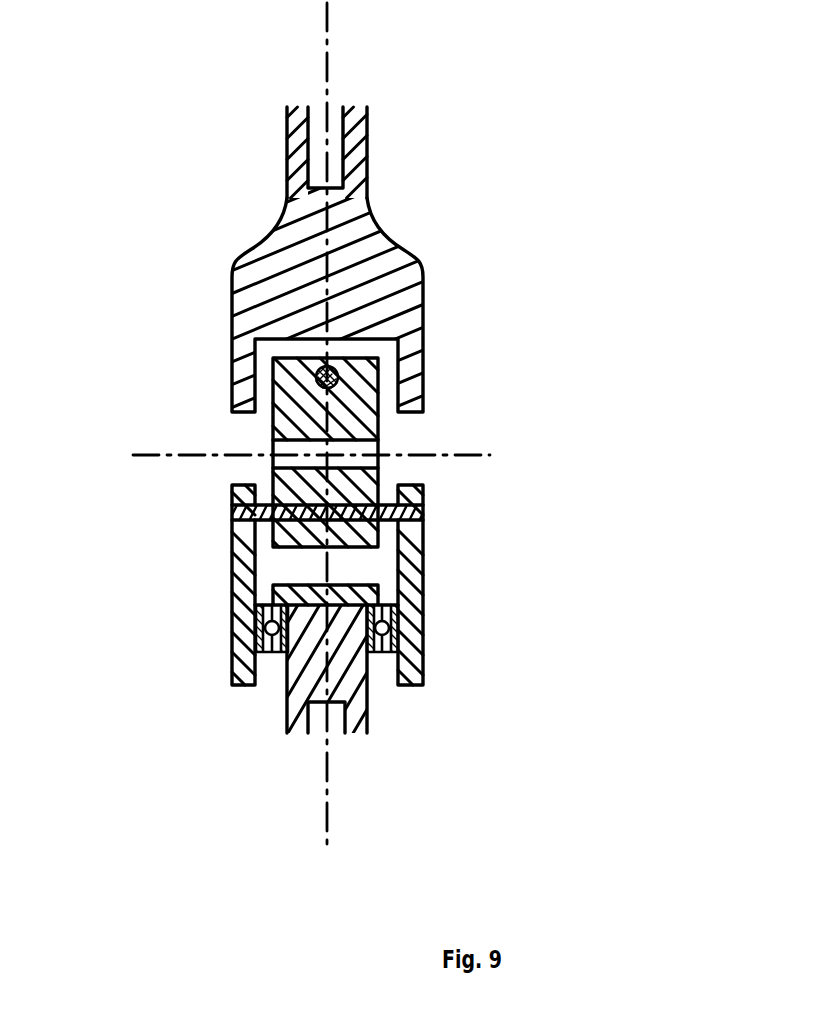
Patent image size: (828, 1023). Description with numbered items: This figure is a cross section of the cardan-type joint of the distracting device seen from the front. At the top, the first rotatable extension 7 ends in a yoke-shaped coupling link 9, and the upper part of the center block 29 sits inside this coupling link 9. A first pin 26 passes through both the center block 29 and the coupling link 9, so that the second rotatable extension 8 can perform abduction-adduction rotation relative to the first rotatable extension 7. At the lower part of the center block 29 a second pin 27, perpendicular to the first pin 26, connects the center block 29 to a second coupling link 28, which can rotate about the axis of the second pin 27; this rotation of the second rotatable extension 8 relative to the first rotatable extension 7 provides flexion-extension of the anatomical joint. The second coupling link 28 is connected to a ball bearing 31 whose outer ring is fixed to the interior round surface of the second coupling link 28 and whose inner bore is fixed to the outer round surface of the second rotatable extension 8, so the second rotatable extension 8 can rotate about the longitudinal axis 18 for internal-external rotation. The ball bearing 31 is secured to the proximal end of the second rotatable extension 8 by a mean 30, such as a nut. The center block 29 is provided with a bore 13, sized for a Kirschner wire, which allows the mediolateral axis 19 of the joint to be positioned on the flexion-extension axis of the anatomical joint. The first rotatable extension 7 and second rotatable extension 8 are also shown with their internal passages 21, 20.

The first rotatable extension 7 is at (300, 164).
The second rotatable extension 8 is at (350, 686).
The coupling link 9 is at (381, 242).
The bore 13 is at (377, 445).
The longitudinal axis 18 is at (327, 62).
The mediolateral axis 19 is at (296, 429).
The bore of second shaft 20 is at (325, 727).
The bore of first shaft 21 is at (330, 166).
The first pin 26 is at (337, 378).
The second pin 27 is at (424, 510).
The second coupling link 28 is at (409, 597).
The center block 29 is at (376, 402).
The mean 30 is at (295, 592).
The ball bearing 31 is at (282, 653).